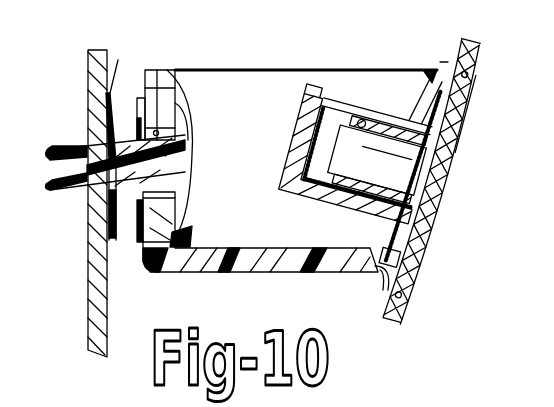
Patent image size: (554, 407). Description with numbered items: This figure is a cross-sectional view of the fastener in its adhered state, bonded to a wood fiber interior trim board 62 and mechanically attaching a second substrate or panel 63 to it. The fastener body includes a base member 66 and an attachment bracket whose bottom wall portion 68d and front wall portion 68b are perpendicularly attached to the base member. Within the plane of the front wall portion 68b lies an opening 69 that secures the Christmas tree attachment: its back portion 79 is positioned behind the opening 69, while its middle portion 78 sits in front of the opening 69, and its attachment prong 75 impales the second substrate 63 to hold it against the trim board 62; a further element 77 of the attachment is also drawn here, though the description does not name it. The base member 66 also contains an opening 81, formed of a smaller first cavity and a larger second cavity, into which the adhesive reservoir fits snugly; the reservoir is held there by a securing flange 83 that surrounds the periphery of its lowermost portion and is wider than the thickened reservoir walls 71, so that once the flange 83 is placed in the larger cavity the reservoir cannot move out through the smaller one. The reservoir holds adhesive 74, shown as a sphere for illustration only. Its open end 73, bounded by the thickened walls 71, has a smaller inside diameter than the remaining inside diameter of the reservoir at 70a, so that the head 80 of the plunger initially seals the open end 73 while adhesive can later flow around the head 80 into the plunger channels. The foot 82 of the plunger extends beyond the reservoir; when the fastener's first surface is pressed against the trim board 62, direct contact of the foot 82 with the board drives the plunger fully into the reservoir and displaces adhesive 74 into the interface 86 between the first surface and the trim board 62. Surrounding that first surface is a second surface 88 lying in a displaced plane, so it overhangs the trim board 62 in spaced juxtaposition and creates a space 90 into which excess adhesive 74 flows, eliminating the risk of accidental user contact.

The trimboard 62 is at (400, 310).
The second substrate 63 is at (92, 68).
The base member 66 is at (424, 92).
The front wall portion 68b is at (155, 224).
The bottom wall portion 68d is at (262, 255).
The opening 69 is at (176, 72).
The remaining inside diameter of the reservoir 70a is at (358, 110).
The thickened reservoir walls 71 is at (413, 115).
The open end 73 is at (443, 156).
The adhesive 74 is at (300, 115).
The attachment prong 75 is at (58, 150).
The spacer strip 77 is at (118, 60).
The middle portion 78 is at (137, 140).
The back portion 79 is at (179, 158).
The head 80 is at (332, 108).
The opening 81 is at (382, 222).
The foot 82 is at (425, 181).
The securing flange 83 is at (452, 130).
The interface 86 is at (462, 102).
The second surface 88 is at (442, 85).
The space 90 is at (470, 68).